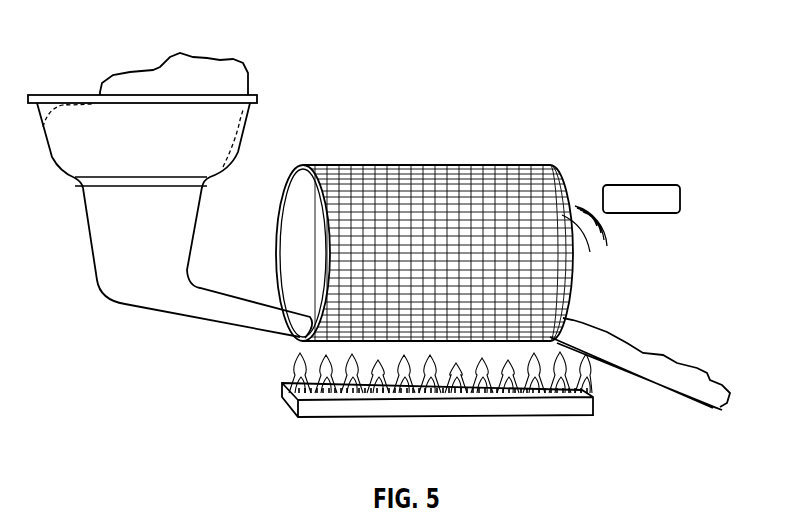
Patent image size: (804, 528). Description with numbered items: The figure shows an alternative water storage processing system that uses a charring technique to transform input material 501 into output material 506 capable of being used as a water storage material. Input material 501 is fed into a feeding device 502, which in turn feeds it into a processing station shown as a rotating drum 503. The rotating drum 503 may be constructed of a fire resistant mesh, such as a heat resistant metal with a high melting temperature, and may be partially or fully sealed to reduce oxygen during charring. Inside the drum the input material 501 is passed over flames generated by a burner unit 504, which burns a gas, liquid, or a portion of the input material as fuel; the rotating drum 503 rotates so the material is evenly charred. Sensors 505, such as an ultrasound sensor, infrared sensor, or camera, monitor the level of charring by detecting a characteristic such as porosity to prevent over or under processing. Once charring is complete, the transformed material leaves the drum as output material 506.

The input material 501 is at (233, 59).
The feeding device 502 is at (200, 213).
The rotating drum 503 is at (360, 165).
The burner unit 504 is at (447, 417).
The sensors 505 is at (633, 184).
The output material 506 is at (677, 363).